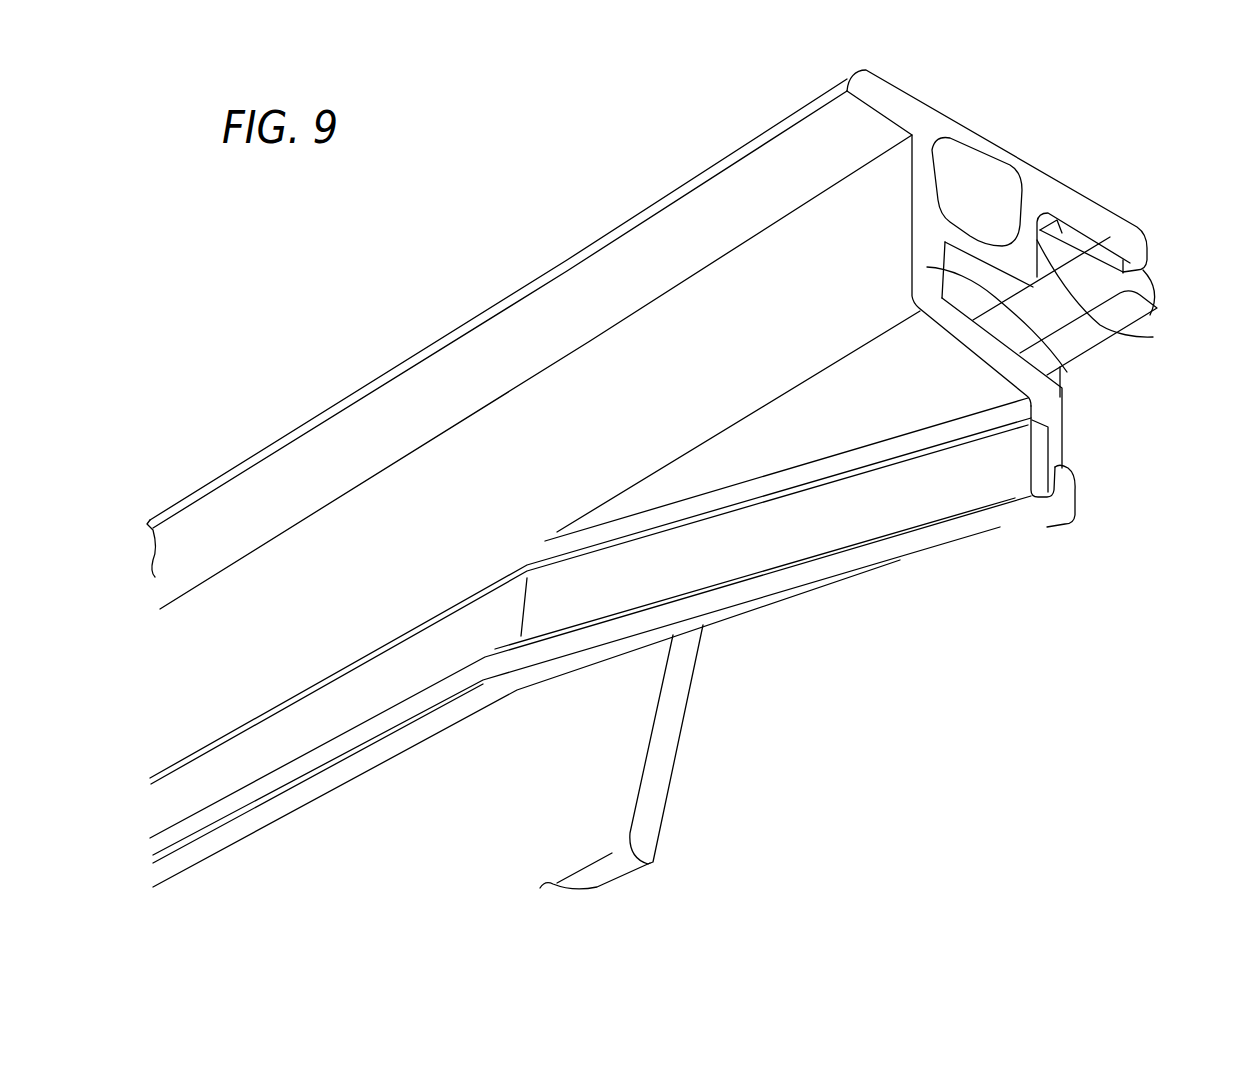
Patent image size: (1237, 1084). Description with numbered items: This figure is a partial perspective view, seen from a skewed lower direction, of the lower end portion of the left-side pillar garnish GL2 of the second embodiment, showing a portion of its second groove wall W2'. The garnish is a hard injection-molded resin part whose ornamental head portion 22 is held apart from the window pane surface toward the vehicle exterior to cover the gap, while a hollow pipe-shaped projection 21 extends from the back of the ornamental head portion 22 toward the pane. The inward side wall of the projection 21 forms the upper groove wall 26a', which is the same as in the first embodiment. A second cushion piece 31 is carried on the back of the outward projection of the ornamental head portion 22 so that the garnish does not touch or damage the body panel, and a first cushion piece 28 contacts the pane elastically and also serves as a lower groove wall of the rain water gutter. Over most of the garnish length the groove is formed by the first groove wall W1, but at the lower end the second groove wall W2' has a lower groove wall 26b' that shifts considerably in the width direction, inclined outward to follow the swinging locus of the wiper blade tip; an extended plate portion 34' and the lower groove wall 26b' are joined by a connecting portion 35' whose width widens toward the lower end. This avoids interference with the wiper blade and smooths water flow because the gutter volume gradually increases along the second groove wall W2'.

The ornamental head portion 22 is at (937, 117).
The pillar garnish GL2 is at (1063, 153).
The second cushion piece 31 is at (1130, 287).
The projection 21 is at (1120, 333).
The extended plate portion 34' is at (1090, 345).
The connecting portion 35' is at (1046, 412).
The upper groove wall 26a' is at (529, 344).
The lower groove wall 26b' is at (590, 600).
The first cushion piece 28 is at (590, 600).
The first groove wall W1 is at (352, 795).
The second groove wall W2' is at (765, 691).